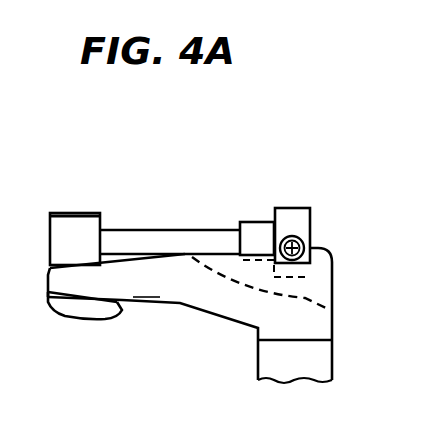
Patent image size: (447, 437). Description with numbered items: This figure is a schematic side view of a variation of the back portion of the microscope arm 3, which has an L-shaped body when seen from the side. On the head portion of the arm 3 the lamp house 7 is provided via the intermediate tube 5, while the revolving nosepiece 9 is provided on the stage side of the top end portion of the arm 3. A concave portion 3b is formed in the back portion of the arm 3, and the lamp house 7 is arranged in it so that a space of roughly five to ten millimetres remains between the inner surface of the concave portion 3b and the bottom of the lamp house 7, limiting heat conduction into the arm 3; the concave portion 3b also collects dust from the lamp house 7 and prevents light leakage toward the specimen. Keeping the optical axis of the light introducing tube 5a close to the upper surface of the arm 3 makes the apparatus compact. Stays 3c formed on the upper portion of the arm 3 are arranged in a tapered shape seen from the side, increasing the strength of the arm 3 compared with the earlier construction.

The arm 3 is at (317, 358).
The concave portion 3b is at (307, 293).
The stays 3c is at (318, 248).
The intermediate tube 5 is at (86, 213).
The light introducing tube 5a is at (178, 236).
The lamp house 7 is at (292, 222).
The revolving nosepiece 9 is at (68, 307).